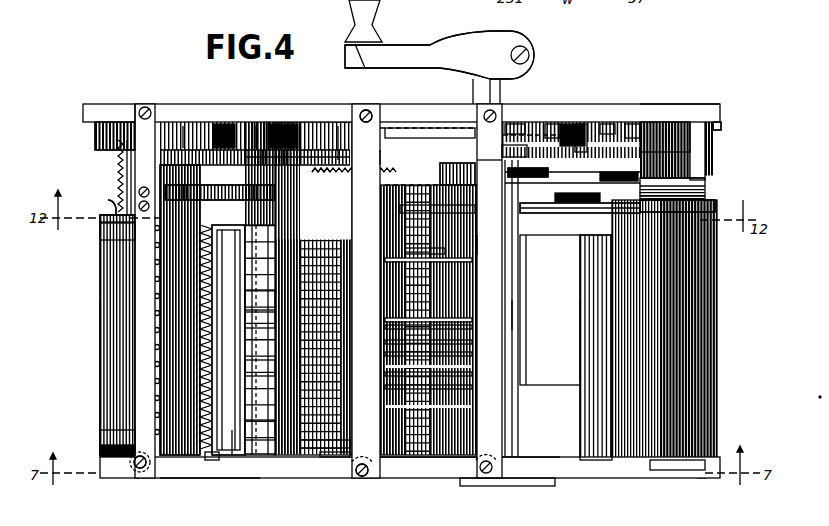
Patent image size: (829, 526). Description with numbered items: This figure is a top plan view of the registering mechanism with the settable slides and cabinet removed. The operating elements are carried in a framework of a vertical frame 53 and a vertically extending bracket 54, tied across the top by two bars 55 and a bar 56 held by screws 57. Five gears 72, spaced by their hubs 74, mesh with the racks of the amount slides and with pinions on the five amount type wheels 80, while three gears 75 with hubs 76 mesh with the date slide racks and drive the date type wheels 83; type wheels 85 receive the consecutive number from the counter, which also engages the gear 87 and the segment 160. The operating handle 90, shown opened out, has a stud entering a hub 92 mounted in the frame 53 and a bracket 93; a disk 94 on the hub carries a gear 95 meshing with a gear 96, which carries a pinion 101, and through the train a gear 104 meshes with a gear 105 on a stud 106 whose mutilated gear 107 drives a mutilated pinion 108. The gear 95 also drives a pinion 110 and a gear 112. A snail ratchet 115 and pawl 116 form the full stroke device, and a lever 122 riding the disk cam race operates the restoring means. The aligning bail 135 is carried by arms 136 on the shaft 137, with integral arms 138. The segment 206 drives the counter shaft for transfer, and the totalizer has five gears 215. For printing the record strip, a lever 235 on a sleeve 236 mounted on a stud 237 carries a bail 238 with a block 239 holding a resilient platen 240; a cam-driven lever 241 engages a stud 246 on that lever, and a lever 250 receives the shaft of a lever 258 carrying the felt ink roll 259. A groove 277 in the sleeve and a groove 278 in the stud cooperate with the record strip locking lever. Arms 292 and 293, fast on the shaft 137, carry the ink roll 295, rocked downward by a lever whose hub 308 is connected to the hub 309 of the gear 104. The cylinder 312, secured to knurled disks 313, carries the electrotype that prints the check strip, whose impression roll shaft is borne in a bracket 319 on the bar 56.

The vertical frame 53 is at (665, 108).
The vertically extending bracket 54 is at (195, 477).
The bars 55 is at (376, 455).
The bar 56 is at (120, 345).
The screws 57 is at (138, 113).
The gears 72 is at (447, 256).
The hubs 74 is at (410, 251).
The gears 75 is at (470, 390).
The hub 76 is at (330, 466).
The amount type wheels 80 is at (250, 305).
The date type wheels 83 is at (250, 430).
The type wheels 85 is at (250, 320).
The gear 87 is at (470, 345).
The operating handle 90 is at (412, 50).
The hub 92 is at (520, 126).
The bracket 93 is at (430, 135).
The disk 94 is at (555, 130).
The gear 95 is at (520, 152).
The gear 96 is at (367, 148).
The pinion 101 is at (338, 145).
The gear 104 is at (255, 138).
The gear 105 is at (183, 130).
The stud 106 is at (213, 128).
The mutilated gear 107 is at (230, 135).
The mutilated pinion 108 is at (112, 140).
The pinion 110 is at (580, 150).
The gear 112 is at (635, 130).
The snail ratchet 115 is at (487, 165).
The pawl 116 is at (560, 172).
The lever 122 is at (610, 126).
The bail 135 is at (232, 440).
The arms 136 is at (255, 485).
The shaft 137 is at (300, 135).
The arms 138 is at (312, 176).
The segment 160 is at (455, 322).
The segment 206 is at (718, 126).
The gears 215 is at (718, 172).
The lever 235 is at (700, 210).
The sleeve 236 is at (718, 186).
The stud 237 is at (688, 122).
The bail 238 is at (530, 385).
The block 239 is at (530, 340).
The resilient platen 240 is at (512, 313).
The lever 241 is at (420, 180).
The stud 246 is at (550, 307).
The lever 250 is at (475, 210).
The lever 258 is at (500, 486).
The roll 259 is at (480, 246).
The groove 277 is at (690, 198).
The groove 278 is at (640, 182).
The arm 292 is at (250, 195).
The arm 293 is at (213, 462).
The roll 295 is at (170, 245).
The hub 308 is at (268, 158).
The hub 309 is at (280, 132).
The cylinder 312 is at (122, 297).
The knurled disks 313 is at (102, 240).
The bracket 319 is at (108, 205).